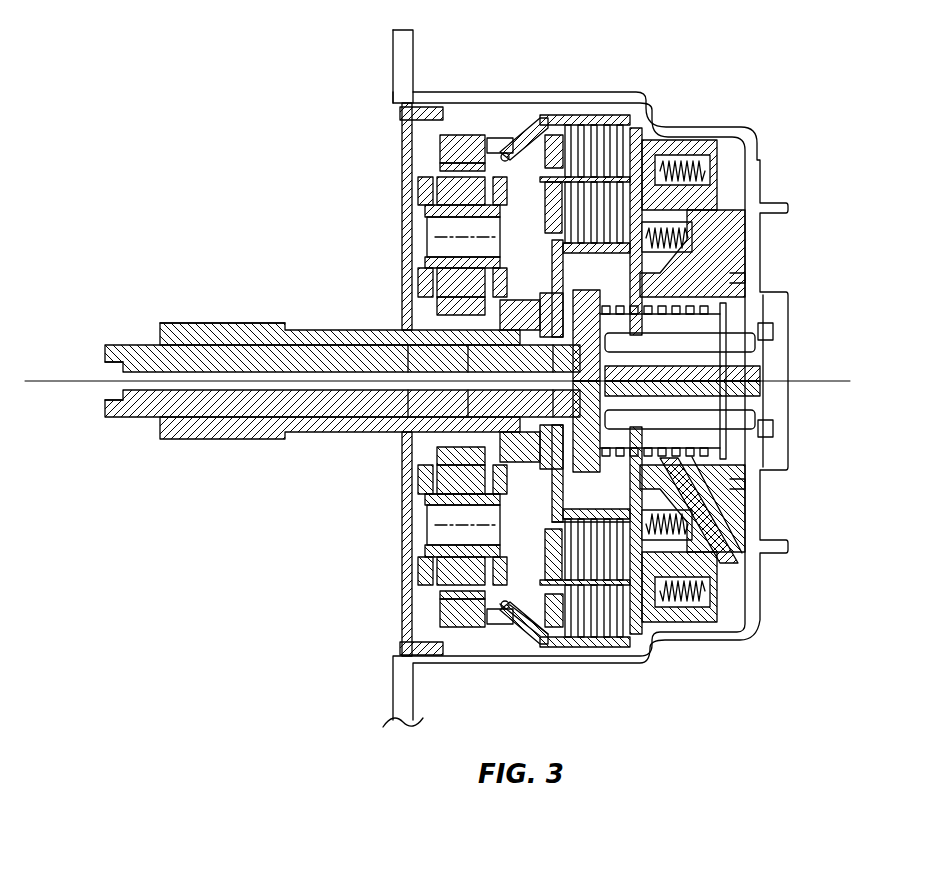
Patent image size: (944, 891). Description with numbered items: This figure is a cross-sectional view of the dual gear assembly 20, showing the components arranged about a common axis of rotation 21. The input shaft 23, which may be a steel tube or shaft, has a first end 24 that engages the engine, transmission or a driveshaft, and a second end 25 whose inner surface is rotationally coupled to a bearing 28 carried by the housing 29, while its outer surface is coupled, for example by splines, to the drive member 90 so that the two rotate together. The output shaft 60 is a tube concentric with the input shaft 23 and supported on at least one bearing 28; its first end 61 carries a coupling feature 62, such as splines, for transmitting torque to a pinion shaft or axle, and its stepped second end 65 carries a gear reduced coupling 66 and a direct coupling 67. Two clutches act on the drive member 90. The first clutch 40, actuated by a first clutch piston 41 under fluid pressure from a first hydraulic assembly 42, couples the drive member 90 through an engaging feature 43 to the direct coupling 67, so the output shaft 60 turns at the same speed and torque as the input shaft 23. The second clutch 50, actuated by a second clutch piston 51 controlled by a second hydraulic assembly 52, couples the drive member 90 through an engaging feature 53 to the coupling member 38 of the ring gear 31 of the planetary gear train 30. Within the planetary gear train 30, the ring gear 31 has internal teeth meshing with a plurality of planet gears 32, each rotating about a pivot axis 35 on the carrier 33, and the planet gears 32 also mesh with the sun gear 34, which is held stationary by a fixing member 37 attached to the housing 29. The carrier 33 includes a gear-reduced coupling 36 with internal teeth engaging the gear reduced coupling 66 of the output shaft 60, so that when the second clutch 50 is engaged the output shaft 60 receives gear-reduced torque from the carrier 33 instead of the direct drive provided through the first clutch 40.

The dual gear assembly 20 is at (245, 146).
The axis of rotation 21 is at (100, 384).
The input shaft 23 is at (246, 369).
The first end 24 is at (132, 420).
The second end 25 is at (672, 312).
The bearing 28 is at (455, 342).
The housing 29 is at (578, 663).
The planetary gear train 30 is at (386, 178).
The ring gear 31 is at (455, 133).
The planet gears 32 is at (445, 200).
The carrier 33 is at (445, 265).
The sun gear 34 is at (445, 300).
The pivot axis 35 is at (440, 520).
The gear-reduced coupling 36 is at (450, 490).
The fixing member 37 is at (405, 128).
The coupling member 38 is at (570, 125).
The first clutch 40 is at (612, 196).
The first clutch piston 41 is at (696, 222).
The first hydraulic assembly 42 is at (722, 485).
The engaging feature 43 is at (642, 600).
The second clutch 50 is at (614, 134).
The second clutch piston 51 is at (682, 166).
The second hydraulic assembly 52 is at (740, 550).
The engaging feature 53 is at (622, 600).
The output shaft 60 is at (297, 440).
The first end 61 is at (232, 322).
The coupling feature 62 is at (190, 322).
The second end 65 is at (505, 606).
The gear reduced coupling 66 is at (440, 468).
The direct coupling 67 is at (528, 606).
The drive member 90 is at (700, 285).